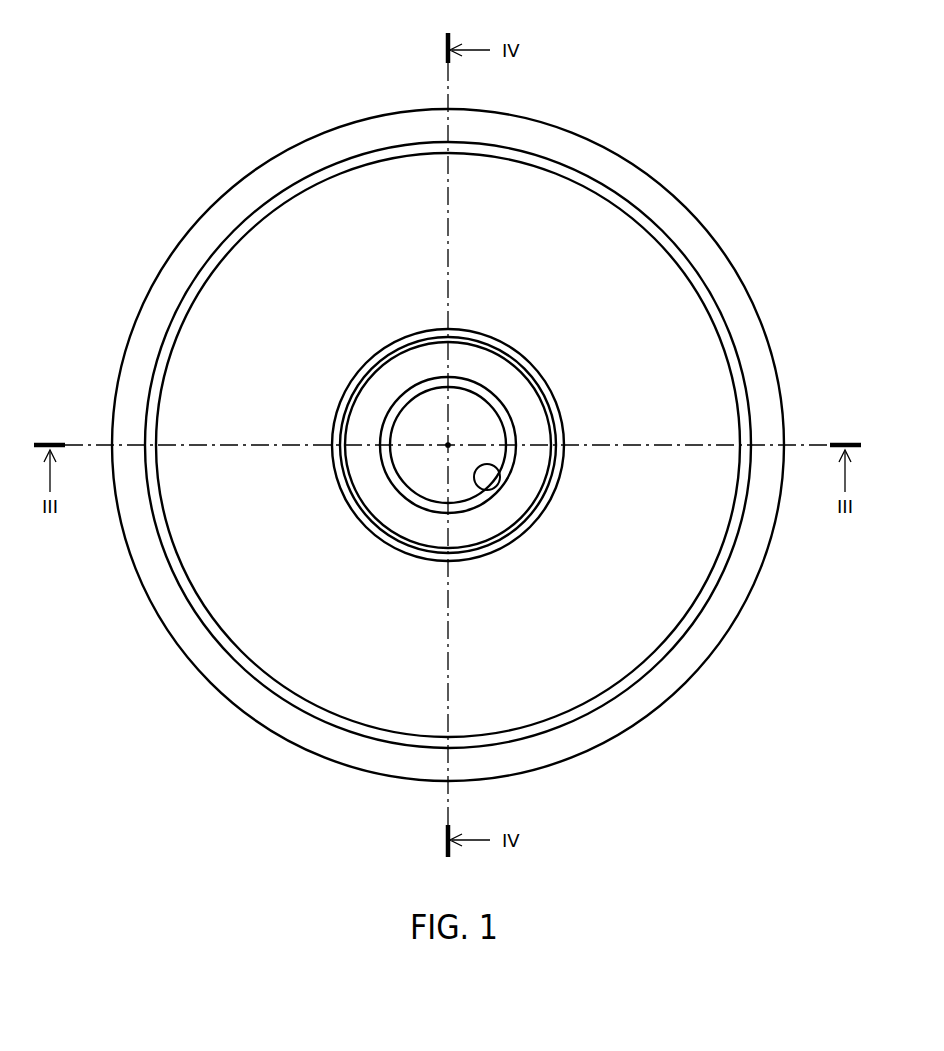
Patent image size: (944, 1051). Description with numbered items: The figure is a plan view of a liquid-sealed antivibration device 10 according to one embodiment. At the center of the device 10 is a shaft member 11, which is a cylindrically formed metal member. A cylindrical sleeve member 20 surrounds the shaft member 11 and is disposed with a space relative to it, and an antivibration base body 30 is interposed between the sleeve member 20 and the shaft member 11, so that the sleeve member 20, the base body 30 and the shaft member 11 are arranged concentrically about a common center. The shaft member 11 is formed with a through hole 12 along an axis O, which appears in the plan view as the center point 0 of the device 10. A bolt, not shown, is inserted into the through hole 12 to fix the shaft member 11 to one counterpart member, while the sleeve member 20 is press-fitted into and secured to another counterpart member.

The liquid-sealed antivibration device 10 is at (723, 90).
The sleeve member 20 is at (702, 253).
The antivibration base body 30 is at (693, 322).
The shaft member 11 is at (513, 385).
The through hole 12 is at (496, 474).
The axis 0 is at (450, 443).